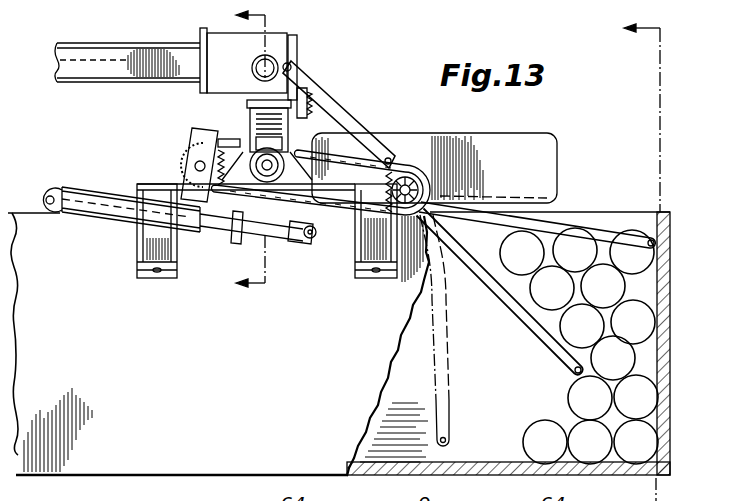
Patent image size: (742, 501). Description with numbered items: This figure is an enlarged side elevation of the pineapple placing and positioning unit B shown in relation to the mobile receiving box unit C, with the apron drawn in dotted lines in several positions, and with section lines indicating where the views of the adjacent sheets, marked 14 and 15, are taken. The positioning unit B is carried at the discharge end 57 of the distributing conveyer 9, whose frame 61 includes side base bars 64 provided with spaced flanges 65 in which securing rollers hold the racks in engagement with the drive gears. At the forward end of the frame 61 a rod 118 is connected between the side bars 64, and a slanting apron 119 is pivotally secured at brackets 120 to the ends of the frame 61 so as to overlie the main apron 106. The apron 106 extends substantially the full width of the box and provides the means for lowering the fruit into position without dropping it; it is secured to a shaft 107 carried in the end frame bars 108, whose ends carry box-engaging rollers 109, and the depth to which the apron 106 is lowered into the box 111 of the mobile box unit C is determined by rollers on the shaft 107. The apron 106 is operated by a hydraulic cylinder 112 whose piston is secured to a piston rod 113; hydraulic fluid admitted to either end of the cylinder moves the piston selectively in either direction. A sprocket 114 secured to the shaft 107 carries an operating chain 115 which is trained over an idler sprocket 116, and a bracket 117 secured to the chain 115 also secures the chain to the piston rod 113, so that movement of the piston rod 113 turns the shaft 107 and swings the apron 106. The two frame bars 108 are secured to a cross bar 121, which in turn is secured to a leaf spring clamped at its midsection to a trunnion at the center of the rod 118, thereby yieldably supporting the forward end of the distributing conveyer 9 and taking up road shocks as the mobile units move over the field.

The spaced flanges 65 is at (71, 44).
The frame 61 is at (152, 31).
The distributing conveyer 9 is at (168, 47).
The side base bars 64 is at (172, 79).
The rod 118 is at (262, 80).
The brackets 120 is at (291, 66).
The discharge end 57 is at (297, 72).
The positioning and placing unit B is at (326, 90).
The slanting apron 119 is at (320, 150).
The operating chain 115 is at (338, 160).
The sprocket 114 is at (412, 178).
The shaft 107 is at (432, 172).
The apron 106 is at (614, 222).
The box 111 is at (671, 396).
The cross bar 121 is at (250, 163).
The idler sprocket 116 is at (176, 160).
The hydraulic cylinder 112 is at (123, 220).
The box-engaging rollers 109 is at (153, 243).
The piston rod 113 is at (282, 233).
The end frame bars 108 is at (275, 245).
The bracket 117 is at (317, 233).
The section line 15 is at (275, 157).
The section line 14 is at (663, 258).
The mobile receiving box unit C is at (95, 481).